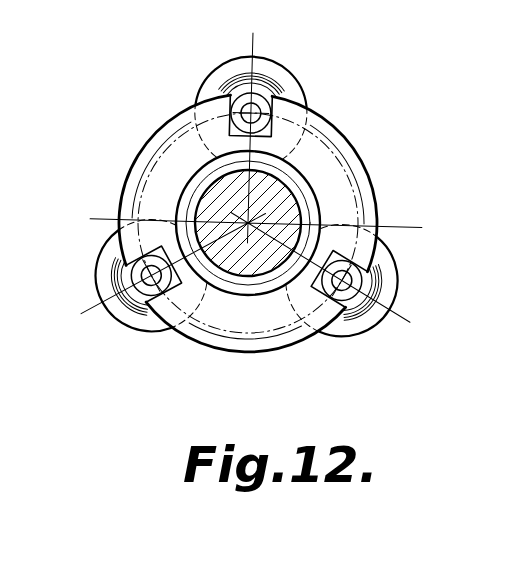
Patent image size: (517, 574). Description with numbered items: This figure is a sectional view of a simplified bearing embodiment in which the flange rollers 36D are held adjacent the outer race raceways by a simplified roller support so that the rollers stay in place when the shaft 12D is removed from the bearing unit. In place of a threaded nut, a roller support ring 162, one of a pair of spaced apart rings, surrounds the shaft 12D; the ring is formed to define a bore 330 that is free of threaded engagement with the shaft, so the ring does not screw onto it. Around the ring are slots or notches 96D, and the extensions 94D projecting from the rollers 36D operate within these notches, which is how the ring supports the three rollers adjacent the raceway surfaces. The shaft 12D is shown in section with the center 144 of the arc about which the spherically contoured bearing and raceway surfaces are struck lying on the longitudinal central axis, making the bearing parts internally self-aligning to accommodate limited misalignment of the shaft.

The shaft 12D is at (219, 294).
The rollers 36D is at (275, 63).
The extensions of rollers 94D is at (249, 104).
The slots or notches 96D is at (376, 227).
The roller support ring 162 is at (338, 191).
The bore 330 is at (310, 178).
The center of arc 144 is at (234, 223).